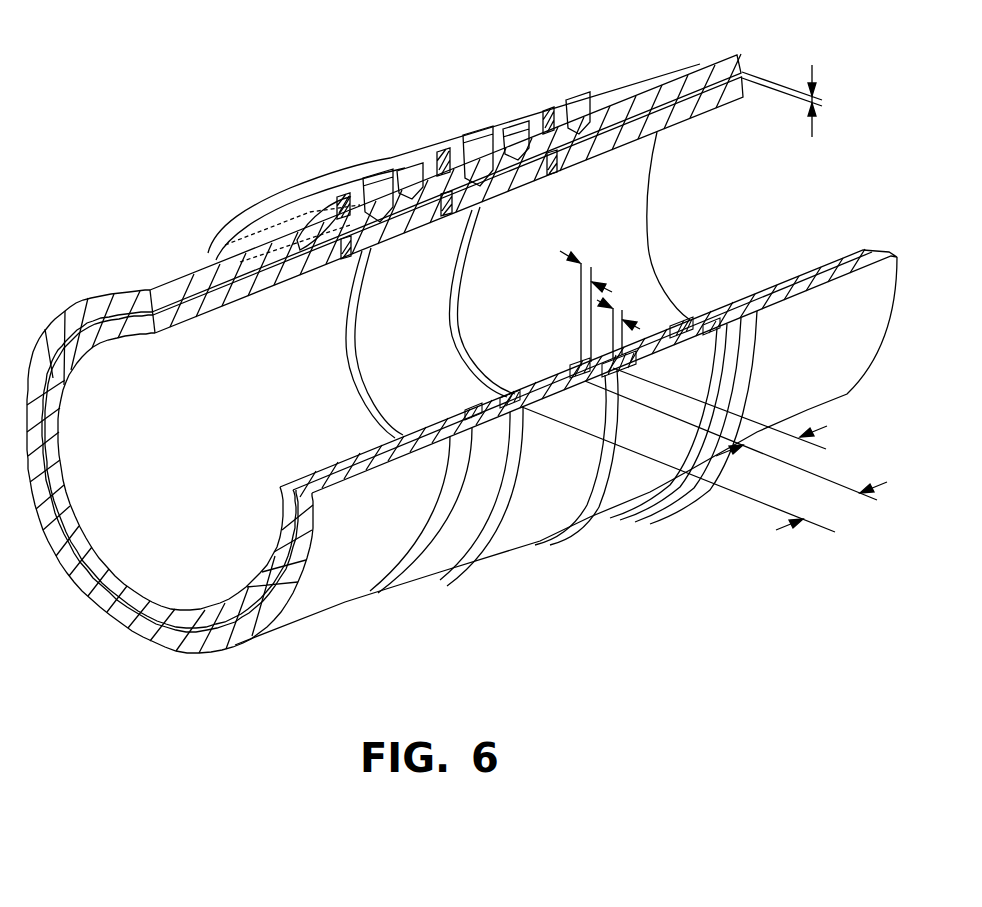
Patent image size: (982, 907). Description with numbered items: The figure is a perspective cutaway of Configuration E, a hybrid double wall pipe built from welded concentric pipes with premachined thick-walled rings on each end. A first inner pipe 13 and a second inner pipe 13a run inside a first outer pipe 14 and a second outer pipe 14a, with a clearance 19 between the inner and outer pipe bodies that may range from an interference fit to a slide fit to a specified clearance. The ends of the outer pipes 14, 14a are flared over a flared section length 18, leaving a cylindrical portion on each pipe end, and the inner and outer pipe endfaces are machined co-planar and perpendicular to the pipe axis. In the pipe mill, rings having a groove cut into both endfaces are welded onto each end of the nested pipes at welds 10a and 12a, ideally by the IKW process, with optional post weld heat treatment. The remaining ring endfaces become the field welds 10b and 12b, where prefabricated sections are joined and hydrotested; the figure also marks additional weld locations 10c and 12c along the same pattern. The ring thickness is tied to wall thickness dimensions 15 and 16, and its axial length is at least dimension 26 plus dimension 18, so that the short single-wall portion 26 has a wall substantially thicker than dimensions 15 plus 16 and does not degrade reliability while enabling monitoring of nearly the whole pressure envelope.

The mill weld 10a is at (373, 243).
The field weld 10b is at (473, 205).
The third ring 10c is at (560, 163).
The mill weld 12a is at (347, 193).
The field weld 12b is at (452, 153).
The third connector 12c is at (556, 108).
The first inner pipe 13 is at (217, 270).
The second inner pipe 13a is at (667, 93).
The first outer pipe 14 is at (183, 307).
The second outer pipe 14a is at (650, 120).
The wall thickness dimension 15 is at (597, 283).
The wall thickness dimension 16 is at (640, 328).
The flared section length 18 is at (731, 434).
The clearance between inner and outer pipe bodies 19 is at (812, 70).
The ring single-wall axial length dimension 26 is at (704, 469).